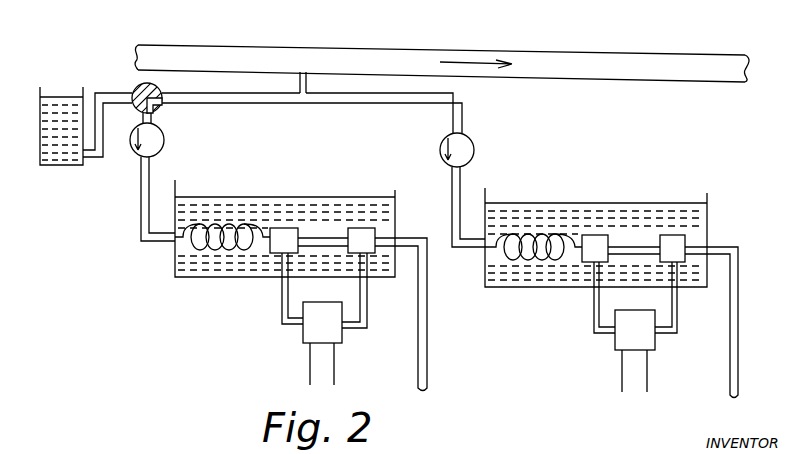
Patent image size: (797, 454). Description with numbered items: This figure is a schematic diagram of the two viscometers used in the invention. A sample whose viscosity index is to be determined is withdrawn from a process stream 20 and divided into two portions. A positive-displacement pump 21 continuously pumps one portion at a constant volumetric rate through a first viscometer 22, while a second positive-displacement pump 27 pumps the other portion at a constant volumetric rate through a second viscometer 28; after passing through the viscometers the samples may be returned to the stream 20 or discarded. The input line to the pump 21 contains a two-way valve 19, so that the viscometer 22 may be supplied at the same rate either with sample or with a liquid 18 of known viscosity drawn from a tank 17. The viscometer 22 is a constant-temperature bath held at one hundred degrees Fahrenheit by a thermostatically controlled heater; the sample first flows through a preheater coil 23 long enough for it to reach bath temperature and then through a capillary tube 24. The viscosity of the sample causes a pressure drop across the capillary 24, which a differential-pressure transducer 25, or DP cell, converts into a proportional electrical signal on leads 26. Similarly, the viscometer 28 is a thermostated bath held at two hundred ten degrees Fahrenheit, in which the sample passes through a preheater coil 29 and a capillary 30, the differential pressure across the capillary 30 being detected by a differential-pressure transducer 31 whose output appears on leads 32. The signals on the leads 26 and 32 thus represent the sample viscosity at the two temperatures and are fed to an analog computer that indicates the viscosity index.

The tank 17 is at (83, 88).
The liquid of known viscosity 18 is at (61, 128).
The two-way valve 19 is at (161, 91).
The process stream 20 is at (272, 46).
The positive-displacement pump 21 is at (161, 134).
The viscometer 22 is at (163, 270).
The preheater coil 23 is at (215, 226).
The capillary tube 24 is at (323, 238).
The differential-pressure transducer 25 is at (303, 333).
The leads 26 is at (310, 357).
The second positive-displacement pump 27 is at (473, 143).
The second viscometer 28 is at (474, 276).
The preheater coil 29 is at (533, 235).
The capillary 30 is at (632, 247).
The differential-pressure transducer 31 is at (615, 339).
The leads 32 is at (622, 369).